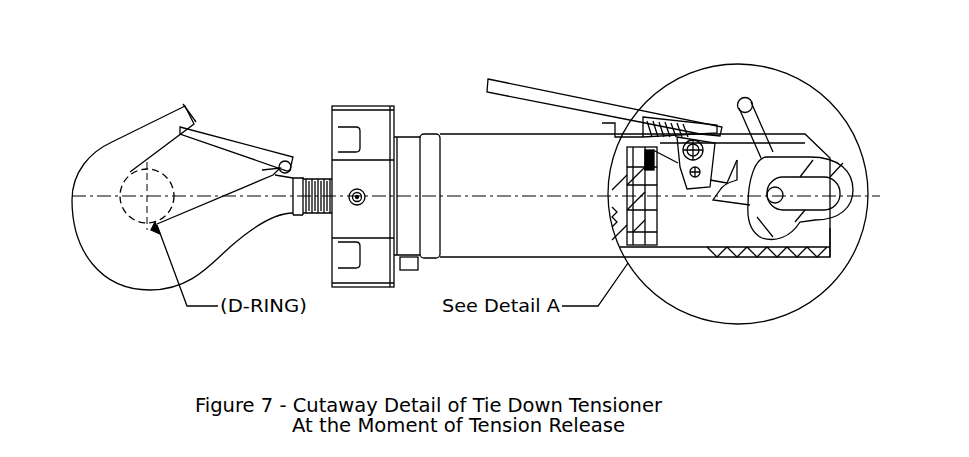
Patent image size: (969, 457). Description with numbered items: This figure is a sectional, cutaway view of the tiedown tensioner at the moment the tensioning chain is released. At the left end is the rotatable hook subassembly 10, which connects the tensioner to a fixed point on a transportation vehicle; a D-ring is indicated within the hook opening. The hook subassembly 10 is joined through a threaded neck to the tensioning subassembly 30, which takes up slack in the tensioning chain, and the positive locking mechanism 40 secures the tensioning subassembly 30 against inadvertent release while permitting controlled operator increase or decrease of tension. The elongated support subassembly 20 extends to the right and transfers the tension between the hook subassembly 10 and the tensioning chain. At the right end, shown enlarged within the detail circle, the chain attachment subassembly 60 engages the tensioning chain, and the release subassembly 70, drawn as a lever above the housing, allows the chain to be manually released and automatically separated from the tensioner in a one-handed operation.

The rotatable hook subassembly 10 is at (130, 172).
The support subassembly 20 is at (463, 128).
The tensioning subassembly 30 is at (366, 104).
The positive locking mechanism 40 is at (413, 288).
The chain attachment subassembly 60 is at (783, 233).
The release subassembly 70 is at (547, 88).